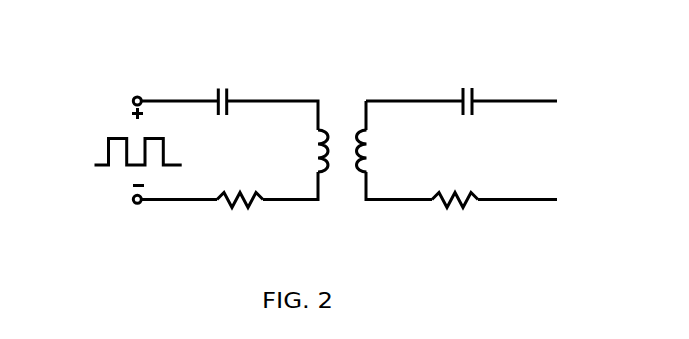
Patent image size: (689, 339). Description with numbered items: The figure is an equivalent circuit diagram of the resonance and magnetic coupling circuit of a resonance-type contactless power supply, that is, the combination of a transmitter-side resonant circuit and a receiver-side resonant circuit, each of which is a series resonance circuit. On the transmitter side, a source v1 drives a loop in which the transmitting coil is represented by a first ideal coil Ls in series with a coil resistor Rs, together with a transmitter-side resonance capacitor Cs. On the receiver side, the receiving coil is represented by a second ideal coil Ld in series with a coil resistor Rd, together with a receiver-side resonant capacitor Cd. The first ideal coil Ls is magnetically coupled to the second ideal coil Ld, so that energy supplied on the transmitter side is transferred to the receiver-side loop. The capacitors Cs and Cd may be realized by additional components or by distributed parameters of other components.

The pulse voltage source v1 is at (121, 150).
The transmitter-side resonance capacitor Cs is at (223, 85).
The first ideal coil Ls is at (301, 151).
The coil resistor Rs is at (240, 225).
The receiver-side resonant capacitor Cd is at (466, 86).
The second ideal coil Ld is at (385, 151).
The coil resistor Rd is at (455, 225).